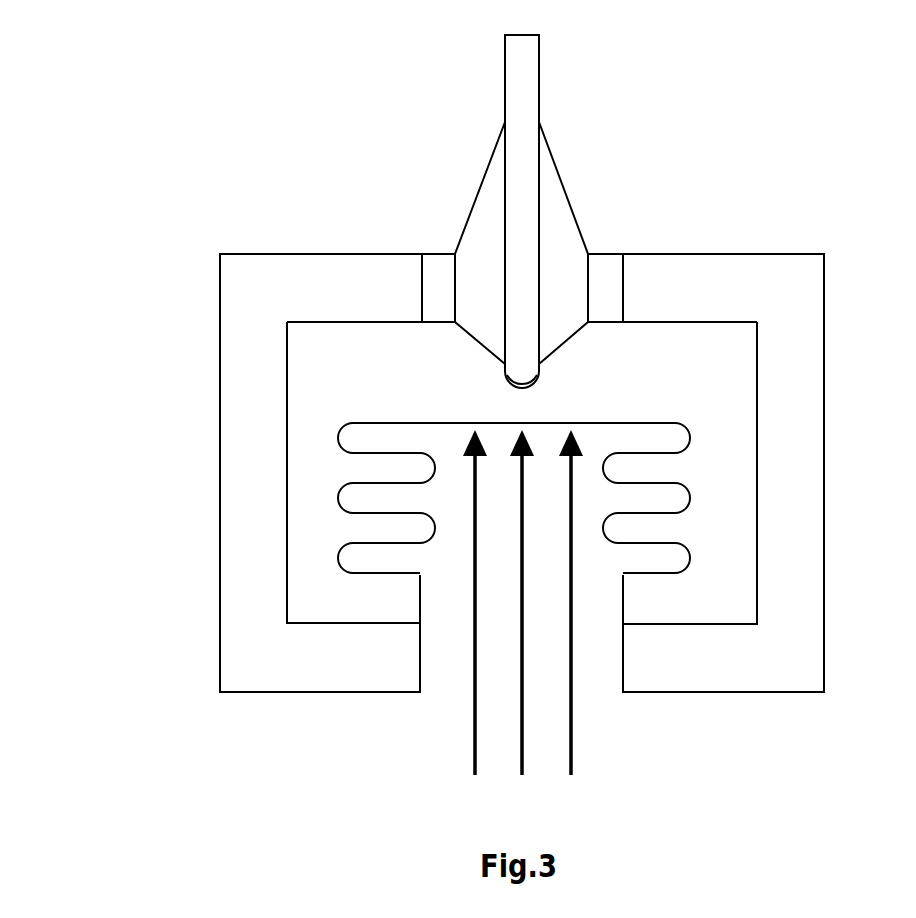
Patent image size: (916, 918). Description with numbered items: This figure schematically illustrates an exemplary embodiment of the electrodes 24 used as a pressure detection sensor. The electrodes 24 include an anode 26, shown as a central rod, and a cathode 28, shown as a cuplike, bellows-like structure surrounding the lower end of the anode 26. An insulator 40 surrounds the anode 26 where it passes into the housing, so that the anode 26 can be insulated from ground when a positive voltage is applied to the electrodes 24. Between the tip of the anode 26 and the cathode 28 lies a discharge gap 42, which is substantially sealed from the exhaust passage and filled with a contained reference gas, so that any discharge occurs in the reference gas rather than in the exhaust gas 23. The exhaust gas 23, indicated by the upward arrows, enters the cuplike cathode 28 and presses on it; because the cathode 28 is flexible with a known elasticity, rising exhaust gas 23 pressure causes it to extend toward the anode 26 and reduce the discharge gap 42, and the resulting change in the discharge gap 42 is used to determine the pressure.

The electrodes 24 is at (228, 210).
The anode 26 is at (525, 125).
The insulator 40 is at (569, 253).
The discharge gap 42 is at (528, 386).
The cathode 28 is at (613, 542).
The exhaust gas 23 is at (473, 678).